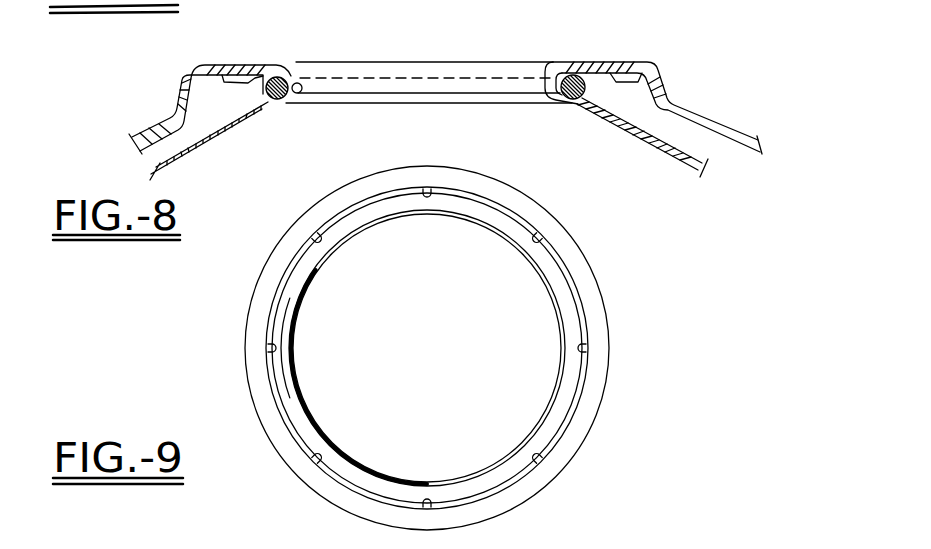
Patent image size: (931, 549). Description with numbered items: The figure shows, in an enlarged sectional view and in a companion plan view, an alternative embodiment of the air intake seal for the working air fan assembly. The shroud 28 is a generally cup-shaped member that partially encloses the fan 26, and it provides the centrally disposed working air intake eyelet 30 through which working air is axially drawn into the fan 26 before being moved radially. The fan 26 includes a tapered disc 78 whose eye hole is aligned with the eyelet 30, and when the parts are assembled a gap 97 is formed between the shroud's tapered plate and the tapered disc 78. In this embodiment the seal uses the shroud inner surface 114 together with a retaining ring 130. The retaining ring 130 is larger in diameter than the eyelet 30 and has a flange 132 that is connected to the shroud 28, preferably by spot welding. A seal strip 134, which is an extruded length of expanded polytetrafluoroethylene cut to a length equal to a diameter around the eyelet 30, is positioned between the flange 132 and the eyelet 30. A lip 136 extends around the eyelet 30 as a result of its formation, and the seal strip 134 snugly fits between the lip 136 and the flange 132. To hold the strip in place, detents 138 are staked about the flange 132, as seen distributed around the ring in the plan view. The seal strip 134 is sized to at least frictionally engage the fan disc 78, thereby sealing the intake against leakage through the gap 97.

In FIG. 8, the fan 26 is at (628, 118).
In FIG. 8, the shroud 28 is at (174, 104).
In FIG. 8, the working air intake eyelet 30 is at (411, 63).
In FIG. 8, the tapered disc 78 is at (673, 150).
In FIG. 8, the gap 97 is at (706, 152).
In FIG. 8, the shroud inner surface 114 is at (653, 67).
In FIG. 8, the retaining ring 130 is at (250, 103).
In FIG. 8, the flange 132 is at (231, 74).
In FIG. 9, the flange 132 is at (603, 296).
In FIG. 8, the seal strip 134 is at (283, 100).
In FIG. 9, the seal strip 134 is at (288, 296).
In FIG. 8, the lip 136 is at (298, 82).
In FIG. 9, the lip 136 is at (302, 310).
In FIG. 9, the detents 138 is at (268, 347).